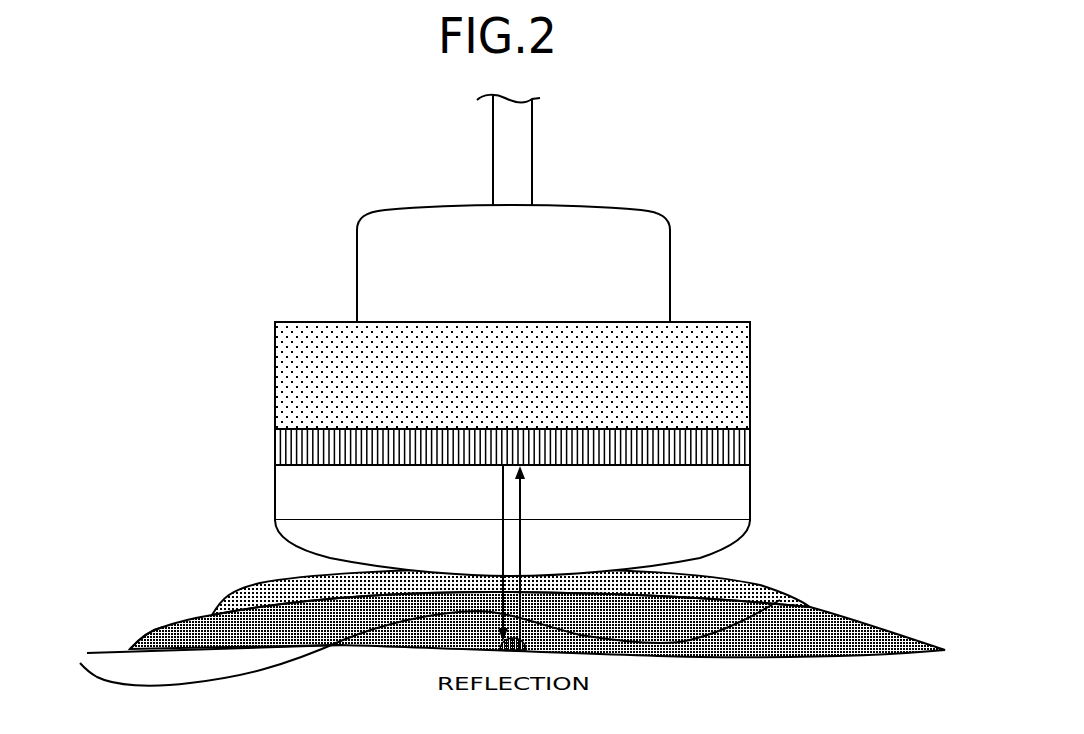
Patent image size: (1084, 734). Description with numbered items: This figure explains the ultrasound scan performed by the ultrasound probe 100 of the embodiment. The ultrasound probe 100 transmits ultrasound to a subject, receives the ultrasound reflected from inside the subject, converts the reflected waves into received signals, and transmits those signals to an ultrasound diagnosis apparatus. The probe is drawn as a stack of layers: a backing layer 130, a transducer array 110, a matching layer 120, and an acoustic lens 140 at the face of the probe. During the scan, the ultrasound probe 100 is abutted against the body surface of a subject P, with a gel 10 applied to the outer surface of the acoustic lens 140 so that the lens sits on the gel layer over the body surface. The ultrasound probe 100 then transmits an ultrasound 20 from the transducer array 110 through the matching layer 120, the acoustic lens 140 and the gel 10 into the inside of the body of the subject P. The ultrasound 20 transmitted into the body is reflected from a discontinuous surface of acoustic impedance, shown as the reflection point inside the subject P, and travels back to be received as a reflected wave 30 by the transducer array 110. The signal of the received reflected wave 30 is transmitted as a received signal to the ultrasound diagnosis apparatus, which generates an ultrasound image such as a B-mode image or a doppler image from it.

The ultrasound probe 100 is at (497, 335).
The transducer array 110 is at (742, 449).
The matching layer 120 is at (740, 498).
The backing layer 130 is at (742, 391).
The acoustic lens 140 is at (725, 532).
The gel 10 is at (237, 590).
The ultrasound 20 is at (80, 663).
The reflected wave 30 is at (780, 600).
The subject P is at (163, 627).